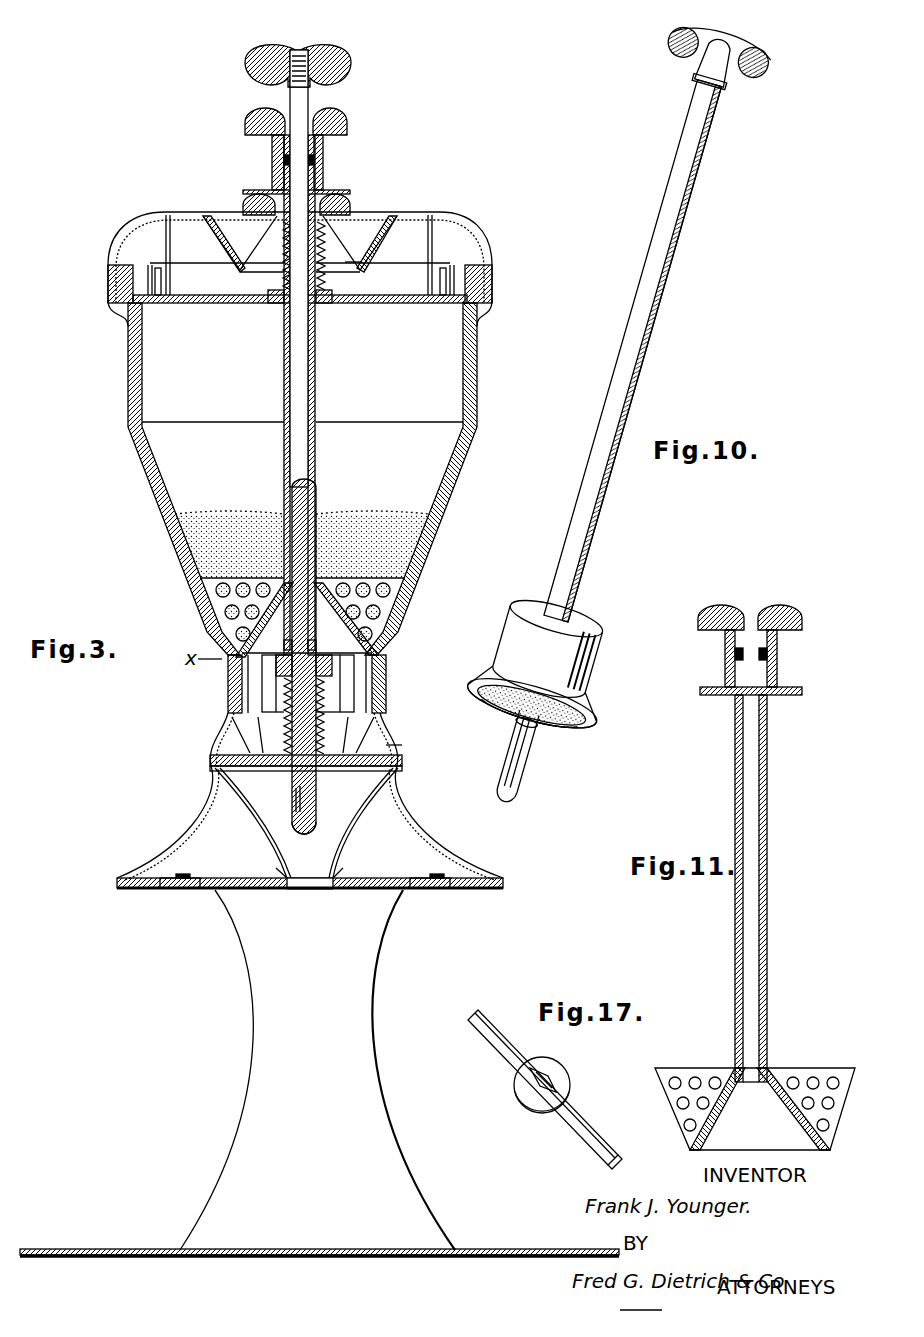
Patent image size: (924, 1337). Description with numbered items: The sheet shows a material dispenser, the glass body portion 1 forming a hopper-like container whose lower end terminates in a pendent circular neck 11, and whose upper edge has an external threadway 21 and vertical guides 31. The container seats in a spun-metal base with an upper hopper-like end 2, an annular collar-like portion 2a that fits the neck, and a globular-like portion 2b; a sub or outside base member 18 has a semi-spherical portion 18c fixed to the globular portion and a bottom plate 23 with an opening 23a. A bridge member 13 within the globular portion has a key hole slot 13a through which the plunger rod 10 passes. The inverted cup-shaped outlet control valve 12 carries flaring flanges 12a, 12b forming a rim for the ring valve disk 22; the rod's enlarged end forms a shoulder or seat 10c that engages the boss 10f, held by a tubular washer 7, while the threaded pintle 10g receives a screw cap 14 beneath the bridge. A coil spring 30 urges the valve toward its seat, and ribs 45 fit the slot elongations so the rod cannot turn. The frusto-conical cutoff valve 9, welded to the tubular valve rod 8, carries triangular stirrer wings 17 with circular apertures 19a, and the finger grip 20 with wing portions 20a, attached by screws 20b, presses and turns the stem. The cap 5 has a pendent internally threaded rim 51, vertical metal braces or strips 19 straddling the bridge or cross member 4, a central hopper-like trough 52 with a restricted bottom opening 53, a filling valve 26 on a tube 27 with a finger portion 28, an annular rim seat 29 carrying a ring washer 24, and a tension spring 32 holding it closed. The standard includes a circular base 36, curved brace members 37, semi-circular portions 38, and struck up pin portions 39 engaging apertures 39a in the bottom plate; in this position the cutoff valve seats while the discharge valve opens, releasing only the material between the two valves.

In FIG. 3, the body portion 1 is at (148, 468).
In FIG. 3, the upper hopper-like end 2 is at (190, 570).
In FIG. 3, the annular collar-like portion 2a is at (276, 870).
In FIG. 3, the globular-like portion 2b is at (388, 736).
In FIG. 3, the bridge or cross member 4 is at (192, 303).
In FIG. 3, the cap 5 is at (405, 214).
In FIG. 3, the tubular washer 7 is at (282, 612).
In FIG. 3, the tubular valve rod 8 is at (314, 410).
In FIG. 11, the tubular valve rod 8 is at (771, 838).
In FIG. 3, the cutoff valve 9 is at (350, 622).
In FIG. 11, the cutoff valve 9 is at (792, 1116).
In FIG. 3, the plunger rod 10 is at (306, 108).
In FIG. 10, the plunger rod 10 is at (700, 158).
In FIG. 3, the shoulder or seat 10c is at (333, 664).
In FIG. 3, the enlarged head portion or boss 10f is at (284, 650).
In FIG. 3, the threaded pintle 10g is at (318, 818).
In FIG. 3, the pendent circular neck 11 is at (228, 694).
In FIG. 3, the outlet control valve 12 is at (356, 688).
In FIG. 10, the outlet control valve 12 is at (496, 652).
In FIG. 3, the flaring flange 12a is at (244, 732).
In FIG. 10, the flaring flange 12a is at (582, 712).
In FIG. 10, the flaring flange 12b is at (556, 758).
In FIG. 3, the bridge member 13 is at (216, 770).
In FIG. 17, the bridge member 13 is at (500, 1052).
In FIG. 17, the key hole slot 13a is at (530, 1081).
In FIG. 3, the screw cap 14 is at (302, 44).
In FIG. 10, the screw cap 14 is at (732, 44).
In FIG. 3, the stirrer wings 17 is at (392, 606).
In FIG. 3, the sub or outside base member 18 is at (200, 832).
In FIG. 3, the semi-spherical portion 18c is at (396, 748).
In FIG. 3, the vertical metal braces or strips 19 is at (171, 245).
In FIG. 11, the vertical metal braces or strips 19 is at (706, 1068).
In FIG. 11, the base perforations 19a is at (678, 1110).
In FIG. 3, the finger grip 20 is at (324, 150).
In FIG. 11, the finger grip 20 is at (778, 642).
In FIG. 3, the wing portions 20a is at (272, 118).
In FIG. 11, the wing portions 20a is at (782, 616).
In FIG. 3, the screws 20b is at (324, 162).
In FIG. 11, the screws 20b is at (778, 660).
In FIG. 3, the external threadway 21 is at (110, 300).
In FIG. 3, the ring valve disk 22 is at (212, 758).
In FIG. 10, the ring valve disk 22 is at (478, 690).
In FIG. 3, the bottom plate 23 is at (338, 870).
In FIG. 3, the base opening 23a is at (307, 890).
In FIG. 3, the ring washer 24 is at (268, 284).
In FIG. 3, the filling valve 26 is at (255, 248).
In FIG. 3, the tube 27 is at (324, 303).
In FIG. 3, the finger portion 28 is at (246, 205).
In FIG. 3, the annular rim seat 29 is at (327, 278).
In FIG. 3, the coil spring 30 is at (280, 748).
In FIG. 3, the vertical guides 31 is at (158, 272).
In FIG. 3, the tension spring 32 is at (276, 303).
In FIG. 3, the circular base 36 is at (154, 1250).
In FIG. 3, the brace members 37 is at (258, 1048).
In FIG. 3, the semi-circular portions 38 is at (145, 890).
In FIG. 3, the struck up pin portions 39 is at (178, 890).
In FIG. 3, the apertures 39a is at (186, 876).
In FIG. 3, the ribs 45 is at (314, 788).
In FIG. 10, the ribs 45 is at (512, 750).
In FIG. 3, the pendent internally threaded rim 51 is at (135, 280).
In FIG. 3, the central hopper-like trough 52 is at (372, 226).
In FIG. 3, the restricted bottom opening 53 is at (358, 262).